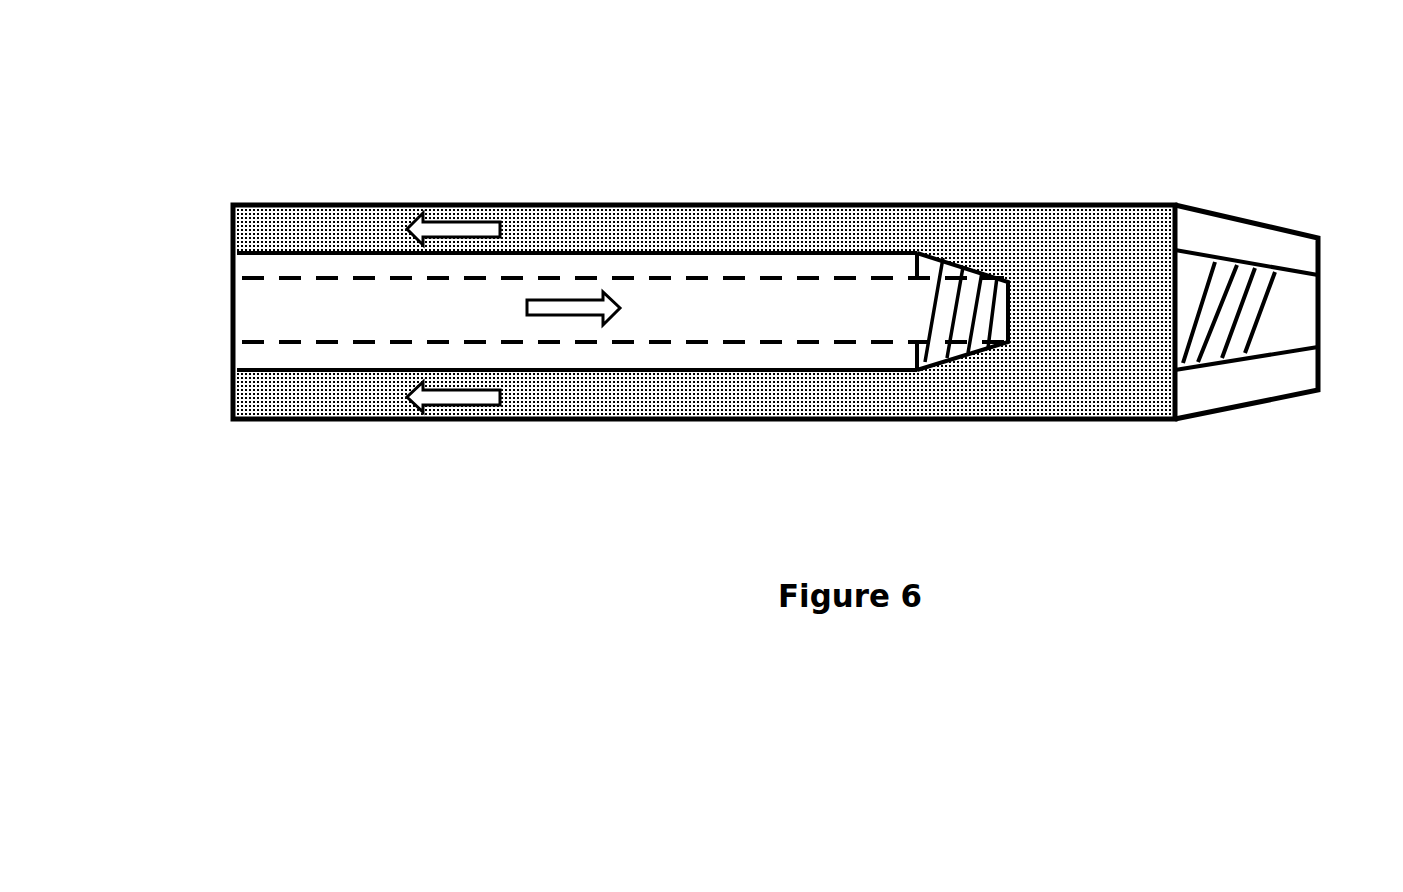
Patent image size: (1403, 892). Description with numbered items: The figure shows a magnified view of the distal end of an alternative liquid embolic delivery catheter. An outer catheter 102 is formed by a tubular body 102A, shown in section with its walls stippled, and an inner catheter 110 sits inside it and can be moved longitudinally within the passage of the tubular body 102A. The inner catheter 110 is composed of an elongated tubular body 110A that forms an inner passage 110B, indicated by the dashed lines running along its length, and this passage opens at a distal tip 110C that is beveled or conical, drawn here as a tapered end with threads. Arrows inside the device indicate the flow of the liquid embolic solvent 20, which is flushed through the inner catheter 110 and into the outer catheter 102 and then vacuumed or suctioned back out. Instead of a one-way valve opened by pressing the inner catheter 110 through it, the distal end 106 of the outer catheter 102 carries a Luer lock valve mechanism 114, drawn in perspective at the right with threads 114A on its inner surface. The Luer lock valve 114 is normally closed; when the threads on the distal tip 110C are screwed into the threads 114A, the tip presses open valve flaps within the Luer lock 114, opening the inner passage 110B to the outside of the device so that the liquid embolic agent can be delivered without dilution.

The liquid embolic solvent 20 is at (840, 307).
The outer catheter 102 is at (640, 205).
The tubular body 102A is at (722, 228).
The distal end 106 is at (1075, 518).
The inner catheter 110 is at (617, 373).
The elongated tubular body 110A is at (717, 373).
The inner passage 110B is at (817, 342).
The distal tip 110C is at (953, 360).
The Luer lock valve mechanism 114 is at (1230, 423).
The threads 114A is at (1267, 302).